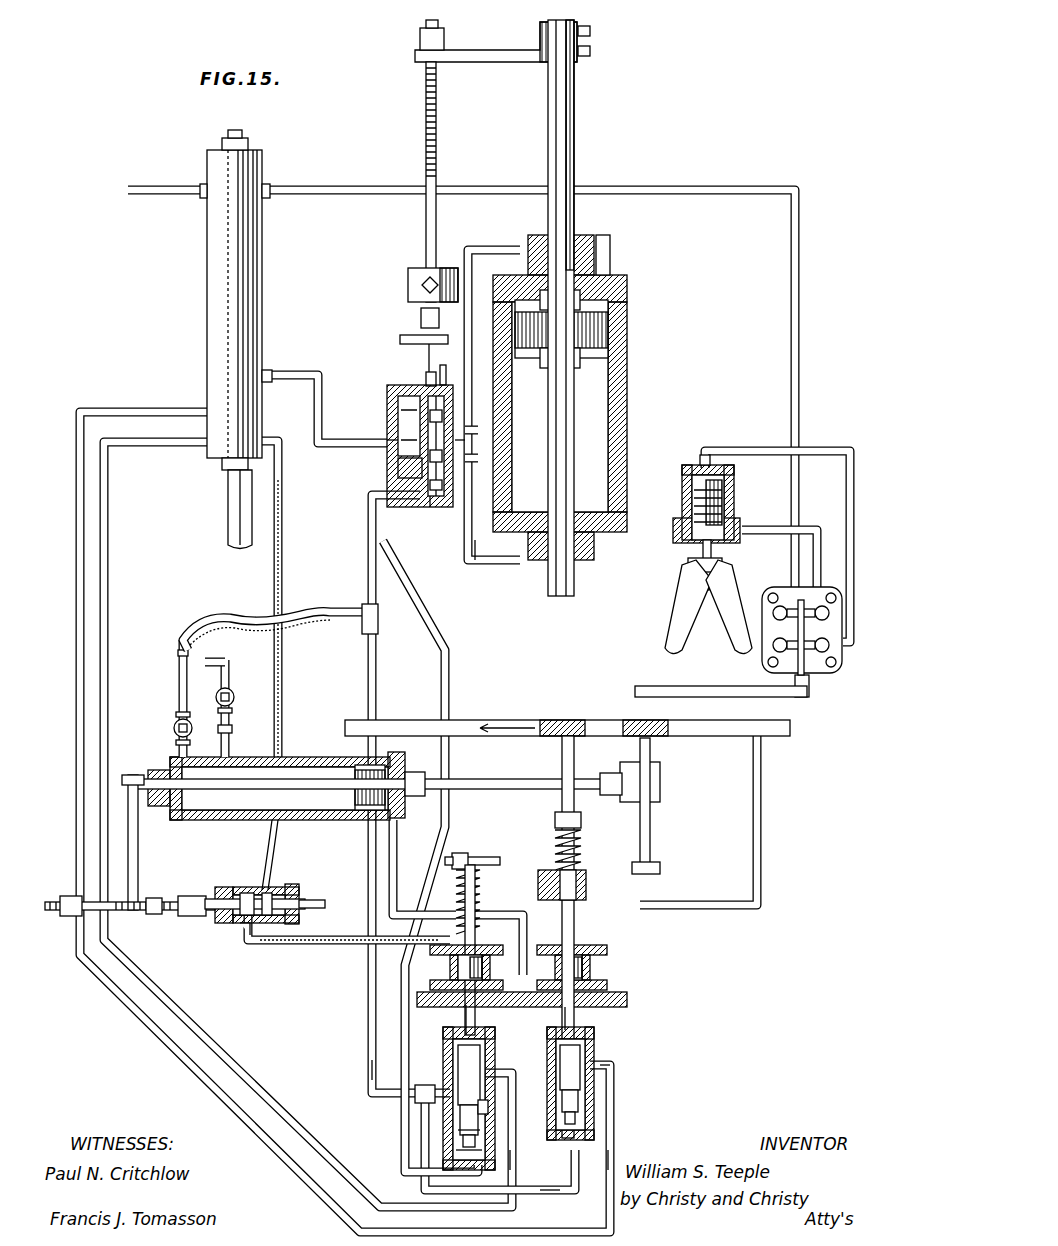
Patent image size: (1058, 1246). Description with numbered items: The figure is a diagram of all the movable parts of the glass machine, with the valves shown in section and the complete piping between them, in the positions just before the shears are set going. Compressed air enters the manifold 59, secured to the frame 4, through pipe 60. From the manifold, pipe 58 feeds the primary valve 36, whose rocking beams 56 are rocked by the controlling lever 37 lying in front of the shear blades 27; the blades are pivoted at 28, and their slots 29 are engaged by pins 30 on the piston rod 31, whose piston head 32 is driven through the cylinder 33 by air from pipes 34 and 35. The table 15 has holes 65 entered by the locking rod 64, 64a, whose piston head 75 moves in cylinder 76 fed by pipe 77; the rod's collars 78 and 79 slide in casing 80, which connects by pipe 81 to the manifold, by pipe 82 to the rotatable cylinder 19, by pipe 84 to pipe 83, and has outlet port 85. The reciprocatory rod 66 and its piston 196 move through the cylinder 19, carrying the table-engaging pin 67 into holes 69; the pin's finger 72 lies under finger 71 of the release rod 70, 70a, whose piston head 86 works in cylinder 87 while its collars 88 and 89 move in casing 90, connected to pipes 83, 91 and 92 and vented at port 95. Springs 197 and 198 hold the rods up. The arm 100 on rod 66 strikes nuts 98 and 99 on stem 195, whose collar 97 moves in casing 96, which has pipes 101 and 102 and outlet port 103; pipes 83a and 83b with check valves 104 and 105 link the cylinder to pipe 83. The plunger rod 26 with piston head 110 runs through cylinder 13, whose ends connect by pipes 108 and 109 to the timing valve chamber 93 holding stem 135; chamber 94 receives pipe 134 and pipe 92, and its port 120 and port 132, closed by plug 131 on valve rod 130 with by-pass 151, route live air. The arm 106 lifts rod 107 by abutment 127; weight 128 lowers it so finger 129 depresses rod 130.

The frame 4 is at (628, 999).
The cylinder 13 is at (628, 385).
The table 15 is at (514, 720).
The rotatable cylinder 19 is at (304, 758).
The plunger rod 26 is at (575, 308).
The shear blades 27 is at (670, 640).
The pivot 28 is at (706, 590).
The slots 29 is at (700, 585).
The pins 30 is at (688, 565).
The piston rod 31 is at (703, 550).
The piston head 32 is at (692, 500).
The cylinder 33 is at (683, 470).
The pipe 34 is at (762, 530).
The pipe 35 is at (750, 451).
The primary valve 36 is at (815, 676).
The controlling lever 37 is at (726, 697).
The rocking beams 56 is at (796, 606).
The pipe 58 is at (797, 285).
The manifold 59 is at (255, 275).
The pipe 60 is at (232, 507).
The locking rod 64 is at (580, 900).
The locking rod 64a is at (578, 1016).
The holes 65 is at (574, 720).
The reciprocatory rod 66 is at (488, 790).
The table-engaging pin 67 is at (652, 820).
The holes 69 is at (656, 720).
The release rod 70 is at (462, 990).
The release rod 70a is at (462, 1018).
The finger 71 is at (479, 861).
The finger 72 is at (662, 868).
The piston head 75 is at (600, 962).
The cylinder 76 is at (598, 980).
The pipe 77 is at (763, 800).
The valve collar 78 is at (596, 1040).
The valve collar 79 is at (580, 1100).
The casing 80 is at (594, 1112).
The pipe 81 is at (610, 1162).
The pipe 82 is at (525, 915).
The pipe 83 is at (372, 1070).
The pipe 83a is at (180, 680).
The pipe 83b is at (225, 670).
The pipe 84 is at (568, 1194).
The outlet port 85 is at (600, 1082).
The piston head 86 is at (450, 965).
The cylinder 87 is at (504, 960).
The valve collar 88 is at (494, 1045).
The valve collar 89 is at (460, 1128).
The casing 90 is at (462, 1148).
The pipe 91 is at (514, 1159).
The pipe 92 is at (398, 1112).
The timing valve chamber 93 is at (452, 490).
The timing valve chamber 94 is at (392, 400).
The outlet port 95 is at (490, 1108).
The casing 96 is at (282, 886).
The valve collar 97 is at (244, 930).
The lock nut 98 is at (152, 915).
The lock nut 99 is at (74, 912).
The arm 100 is at (140, 860).
The pipe 101 is at (272, 840).
The pipe 102 is at (296, 945).
The outlet port 103 is at (230, 888).
The check valve 104 is at (176, 725).
The check valve 105 is at (234, 695).
The arm 106 is at (495, 55).
The rod 107 is at (437, 128).
The pipe 108 is at (490, 254).
The pipe 109 is at (476, 572).
The piston head 110 is at (612, 306).
The port 120 is at (400, 465).
The adjustable abutment 127 is at (418, 40).
The weight 128 is at (418, 272).
The finger 129 is at (402, 338).
The valve rod 130 is at (420, 378).
The valve plug 131 is at (398, 468).
The port 132 is at (400, 440).
The pipe 134 is at (316, 412).
The stem 135 is at (452, 437).
The by-pass 151 is at (428, 380).
The stem 195 is at (312, 899).
The piston 196 is at (370, 765).
The spring 197 is at (582, 854).
The spring 198 is at (478, 893).